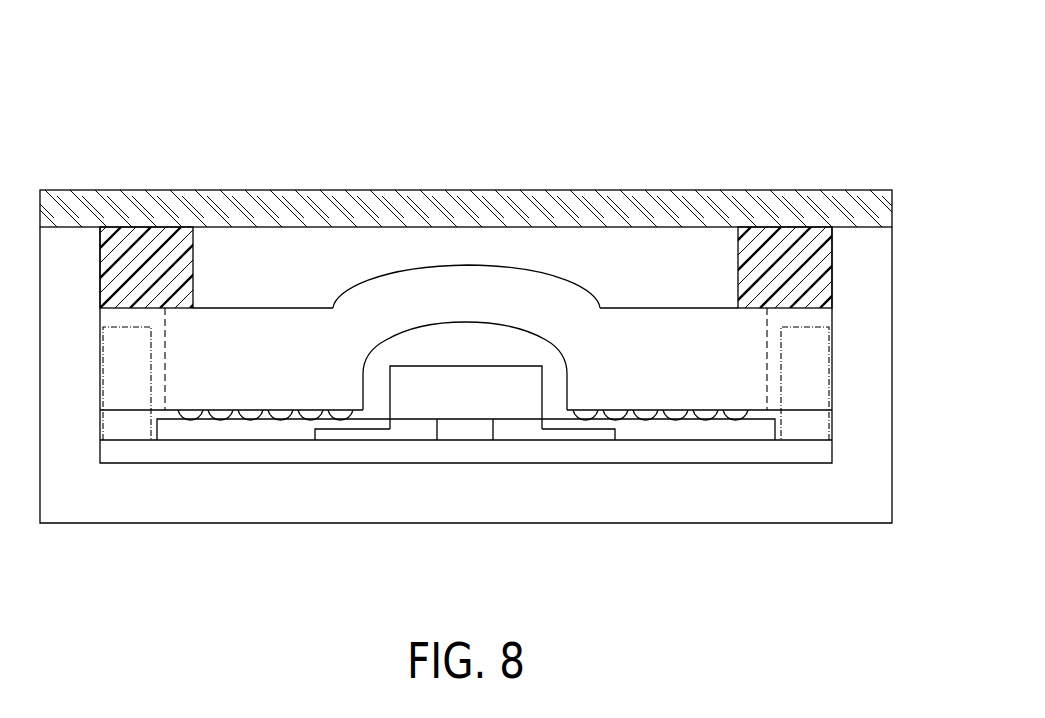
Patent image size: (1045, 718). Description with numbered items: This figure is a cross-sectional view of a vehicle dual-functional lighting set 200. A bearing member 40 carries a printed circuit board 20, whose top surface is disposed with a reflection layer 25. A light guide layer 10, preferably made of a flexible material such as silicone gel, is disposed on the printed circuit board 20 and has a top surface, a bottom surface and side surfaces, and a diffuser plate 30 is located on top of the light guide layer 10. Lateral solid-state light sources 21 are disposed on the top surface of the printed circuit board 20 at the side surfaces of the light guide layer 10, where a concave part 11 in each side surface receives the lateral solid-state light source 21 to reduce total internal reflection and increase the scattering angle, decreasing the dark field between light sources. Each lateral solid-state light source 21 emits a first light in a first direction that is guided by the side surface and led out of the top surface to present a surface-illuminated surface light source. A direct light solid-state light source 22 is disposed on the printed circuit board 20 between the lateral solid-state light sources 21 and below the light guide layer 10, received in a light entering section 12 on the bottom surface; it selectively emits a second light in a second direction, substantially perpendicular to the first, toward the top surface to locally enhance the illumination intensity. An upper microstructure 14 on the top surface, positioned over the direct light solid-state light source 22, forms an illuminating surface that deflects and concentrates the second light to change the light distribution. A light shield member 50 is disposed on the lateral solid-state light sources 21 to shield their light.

The vehicle dual-functional lighting set 200 is at (891, 44).
The light guide layer 10 is at (465, 204).
The concave part 11 is at (167, 387).
The light entering section 12 is at (358, 388).
The upper microstructure 14 is at (467, 262).
The printed circuit board 20 is at (608, 452).
The lateral solid-state light source 21 is at (122, 371).
The direct light solid-state light source 22 is at (465, 398).
The reflection layer 25 is at (678, 430).
The diffuser plate 30 is at (559, 191).
The bearing member 40 is at (896, 263).
The light shield member 50 is at (145, 264).